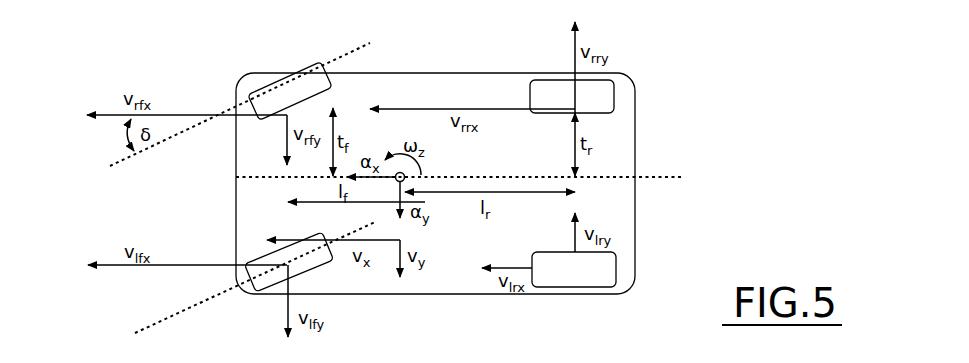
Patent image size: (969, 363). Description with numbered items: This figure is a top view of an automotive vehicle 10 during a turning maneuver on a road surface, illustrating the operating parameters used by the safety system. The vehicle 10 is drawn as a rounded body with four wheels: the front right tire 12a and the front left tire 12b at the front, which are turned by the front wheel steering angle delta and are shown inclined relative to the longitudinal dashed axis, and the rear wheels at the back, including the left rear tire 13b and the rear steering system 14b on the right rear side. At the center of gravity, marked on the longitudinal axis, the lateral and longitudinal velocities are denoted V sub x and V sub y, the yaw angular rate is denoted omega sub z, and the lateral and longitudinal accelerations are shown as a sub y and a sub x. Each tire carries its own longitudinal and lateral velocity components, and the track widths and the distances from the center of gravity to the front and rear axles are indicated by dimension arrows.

The automotive vehicle 10 is at (435, 73).
The front right tire 12a is at (259, 90).
The front left tire 12b is at (265, 294).
The left rear tire 13b is at (616, 268).
The rear steering system 14b is at (614, 98).